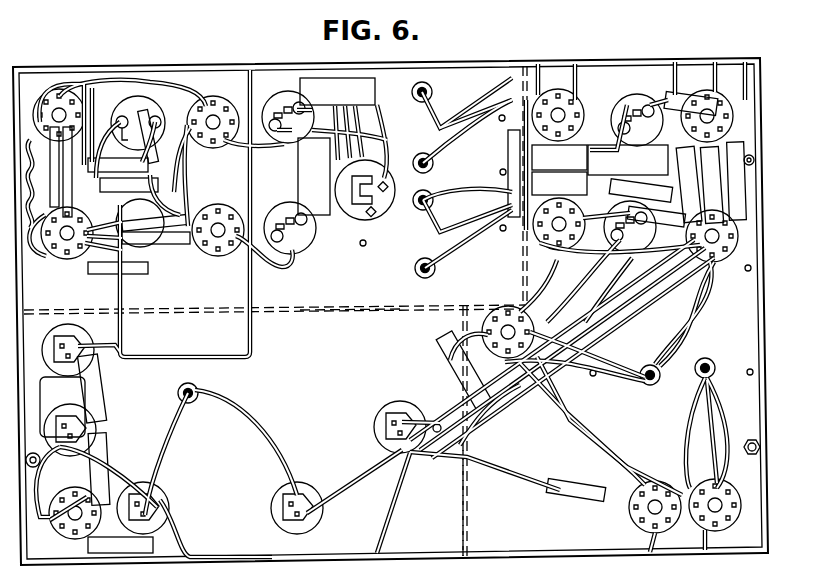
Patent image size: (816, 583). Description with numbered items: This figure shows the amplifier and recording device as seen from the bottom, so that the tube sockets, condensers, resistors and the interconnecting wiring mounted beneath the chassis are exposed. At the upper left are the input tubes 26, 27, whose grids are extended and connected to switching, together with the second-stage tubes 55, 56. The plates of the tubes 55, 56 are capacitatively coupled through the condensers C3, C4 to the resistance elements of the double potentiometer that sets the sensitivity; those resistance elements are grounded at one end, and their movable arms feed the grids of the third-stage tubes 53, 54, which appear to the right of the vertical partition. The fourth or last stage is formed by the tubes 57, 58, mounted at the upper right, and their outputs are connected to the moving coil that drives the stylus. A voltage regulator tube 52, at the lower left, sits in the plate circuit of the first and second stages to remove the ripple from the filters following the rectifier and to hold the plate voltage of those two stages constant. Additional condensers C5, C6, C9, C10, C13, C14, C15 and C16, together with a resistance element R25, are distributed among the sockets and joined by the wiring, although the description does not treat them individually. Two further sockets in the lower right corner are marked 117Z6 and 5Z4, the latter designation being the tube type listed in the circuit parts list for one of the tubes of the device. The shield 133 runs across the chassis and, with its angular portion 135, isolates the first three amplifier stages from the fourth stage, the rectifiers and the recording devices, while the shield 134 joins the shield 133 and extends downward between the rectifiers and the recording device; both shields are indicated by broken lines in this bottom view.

The input tube 27 is at (45, 108).
The second-stage tube 56 is at (214, 102).
The input tube 26 is at (62, 259).
The second-stage tube 55 is at (221, 257).
The capacitor C6 is at (287, 104).
The condenser C4 is at (372, 81).
The condenser C3 is at (310, 173).
The capacitor C5 is at (279, 214).
The potentiometer R25 is at (383, 216).
The third-stage tube 54 is at (578, 106).
The capacitor C9 is at (638, 96).
The fourth-stage tube 58 is at (717, 99).
The third-stage tube 53 is at (535, 237).
The capacitor C10 is at (631, 245).
The fourth-stage tube 57 is at (722, 250).
The angular portion 135 is at (522, 304).
The shield 133 is at (337, 310).
The shield 134 is at (468, 512).
The capacitor C14 is at (75, 330).
The capacitor C13 is at (67, 416).
The voltage regulator tube 52 is at (71, 531).
The capacitor C15 is at (163, 499).
The capacitor C16 is at (279, 533).
The rectifier tube socket 117Z6 is at (630, 513).
The rectifier tube type 5Z4 is at (735, 516).